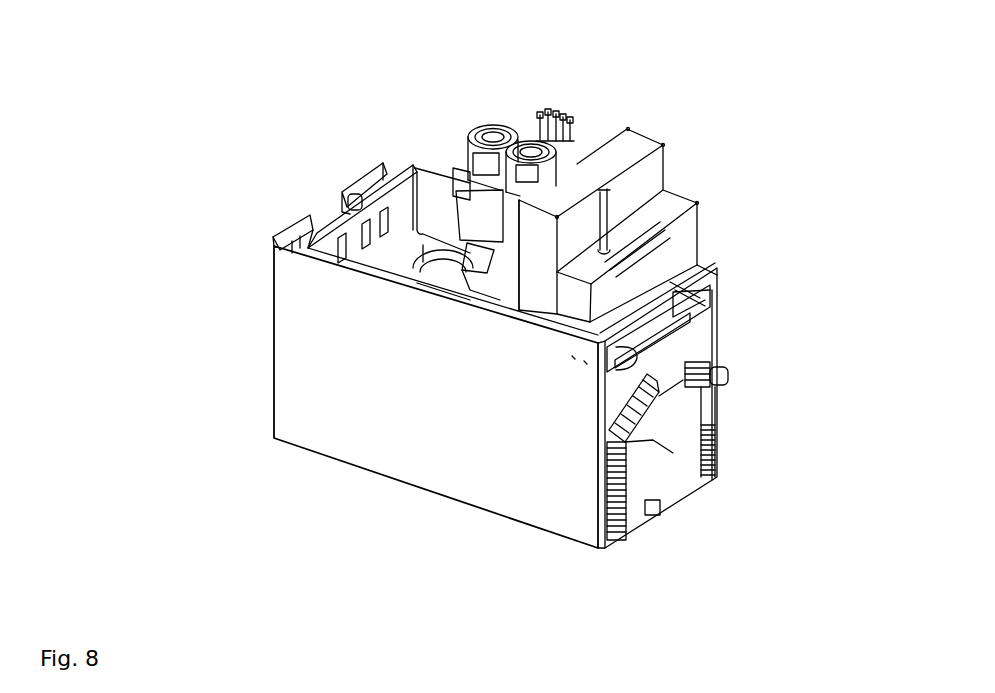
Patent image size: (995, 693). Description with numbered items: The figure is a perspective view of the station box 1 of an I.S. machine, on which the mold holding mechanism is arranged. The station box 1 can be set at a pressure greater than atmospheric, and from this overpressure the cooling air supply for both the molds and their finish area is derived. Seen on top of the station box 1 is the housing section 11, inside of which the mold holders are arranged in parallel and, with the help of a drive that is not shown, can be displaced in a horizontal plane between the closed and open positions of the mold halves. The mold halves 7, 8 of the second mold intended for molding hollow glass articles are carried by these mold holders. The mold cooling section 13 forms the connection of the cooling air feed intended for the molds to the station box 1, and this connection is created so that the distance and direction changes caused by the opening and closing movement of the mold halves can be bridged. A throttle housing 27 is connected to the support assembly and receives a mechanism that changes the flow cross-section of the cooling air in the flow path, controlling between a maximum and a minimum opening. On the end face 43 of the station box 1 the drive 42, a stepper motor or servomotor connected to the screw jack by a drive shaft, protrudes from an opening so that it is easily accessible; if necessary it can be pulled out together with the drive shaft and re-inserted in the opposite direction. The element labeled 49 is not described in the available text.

The station box 1 is at (496, 432).
The mold half 7 is at (490, 126).
The mold half 8 is at (460, 146).
The housing section 11 is at (683, 198).
The mold cooling section 13 is at (477, 262).
The throttle housing 27 is at (580, 135).
The drive 42 is at (657, 440).
The end face 43 is at (607, 518).
The cylindrical connector 49 is at (716, 368).